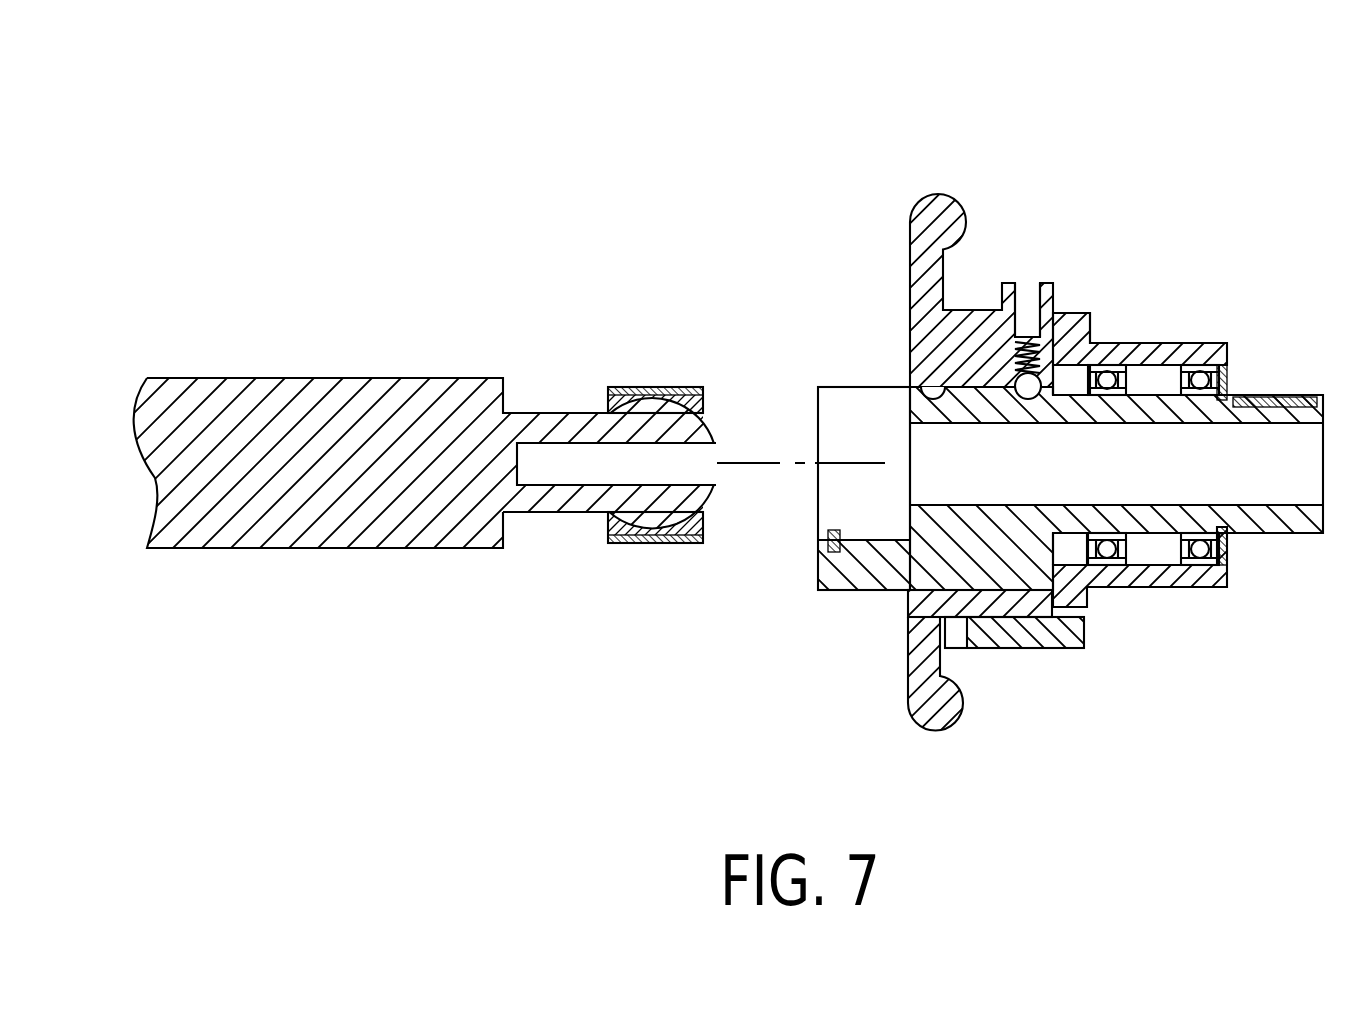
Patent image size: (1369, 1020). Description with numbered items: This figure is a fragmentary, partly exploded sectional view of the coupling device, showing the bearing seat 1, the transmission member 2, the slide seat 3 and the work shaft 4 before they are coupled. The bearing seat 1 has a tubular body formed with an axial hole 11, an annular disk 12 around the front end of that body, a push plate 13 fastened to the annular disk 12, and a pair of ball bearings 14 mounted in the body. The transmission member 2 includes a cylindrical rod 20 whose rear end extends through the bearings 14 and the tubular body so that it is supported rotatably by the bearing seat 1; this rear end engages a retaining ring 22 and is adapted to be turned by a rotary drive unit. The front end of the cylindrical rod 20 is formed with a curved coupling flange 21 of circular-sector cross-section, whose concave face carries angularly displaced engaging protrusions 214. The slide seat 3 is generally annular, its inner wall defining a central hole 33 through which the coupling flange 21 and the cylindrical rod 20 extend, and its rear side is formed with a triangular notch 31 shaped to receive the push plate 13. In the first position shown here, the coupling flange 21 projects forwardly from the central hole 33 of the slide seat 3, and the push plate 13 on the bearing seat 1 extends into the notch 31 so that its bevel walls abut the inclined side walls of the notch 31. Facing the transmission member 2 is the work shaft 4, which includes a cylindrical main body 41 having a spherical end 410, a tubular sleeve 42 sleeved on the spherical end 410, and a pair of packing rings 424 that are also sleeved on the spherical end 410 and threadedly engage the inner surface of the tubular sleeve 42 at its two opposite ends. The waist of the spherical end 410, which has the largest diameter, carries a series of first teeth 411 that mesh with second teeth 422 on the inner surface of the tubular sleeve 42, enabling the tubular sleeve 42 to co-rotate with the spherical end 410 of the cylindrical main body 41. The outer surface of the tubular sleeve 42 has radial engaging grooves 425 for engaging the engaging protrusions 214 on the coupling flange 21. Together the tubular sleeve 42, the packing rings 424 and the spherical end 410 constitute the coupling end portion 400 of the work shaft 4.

The bearing seat 1 is at (1058, 460).
The axial hole 11 is at (1081, 362).
The annular disk 12 is at (1060, 318).
The push plate 13 is at (1043, 648).
The ball bearings 14 is at (1110, 372).
The transmission member 2 is at (1000, 600).
The cylindrical rod 20 is at (1153, 520).
The coupling flange 21 is at (835, 582).
The engaging protrusions 214 is at (828, 541).
The retaining ring 22 is at (1228, 370).
The slide seat 3 is at (980, 435).
The triangular notch 31 is at (977, 648).
The central hole 33 is at (898, 580).
The work shaft 4 is at (448, 446).
The cylindrical main body 41 is at (388, 405).
The coupling end portion 400 is at (606, 540).
The spherical end 410 is at (672, 508).
The first teeth 411 is at (655, 400).
The tubular sleeve 42 is at (655, 446).
The second teeth 422 is at (657, 543).
The packing rings 424 is at (610, 407).
The radial engaging grooves 425 is at (615, 545).